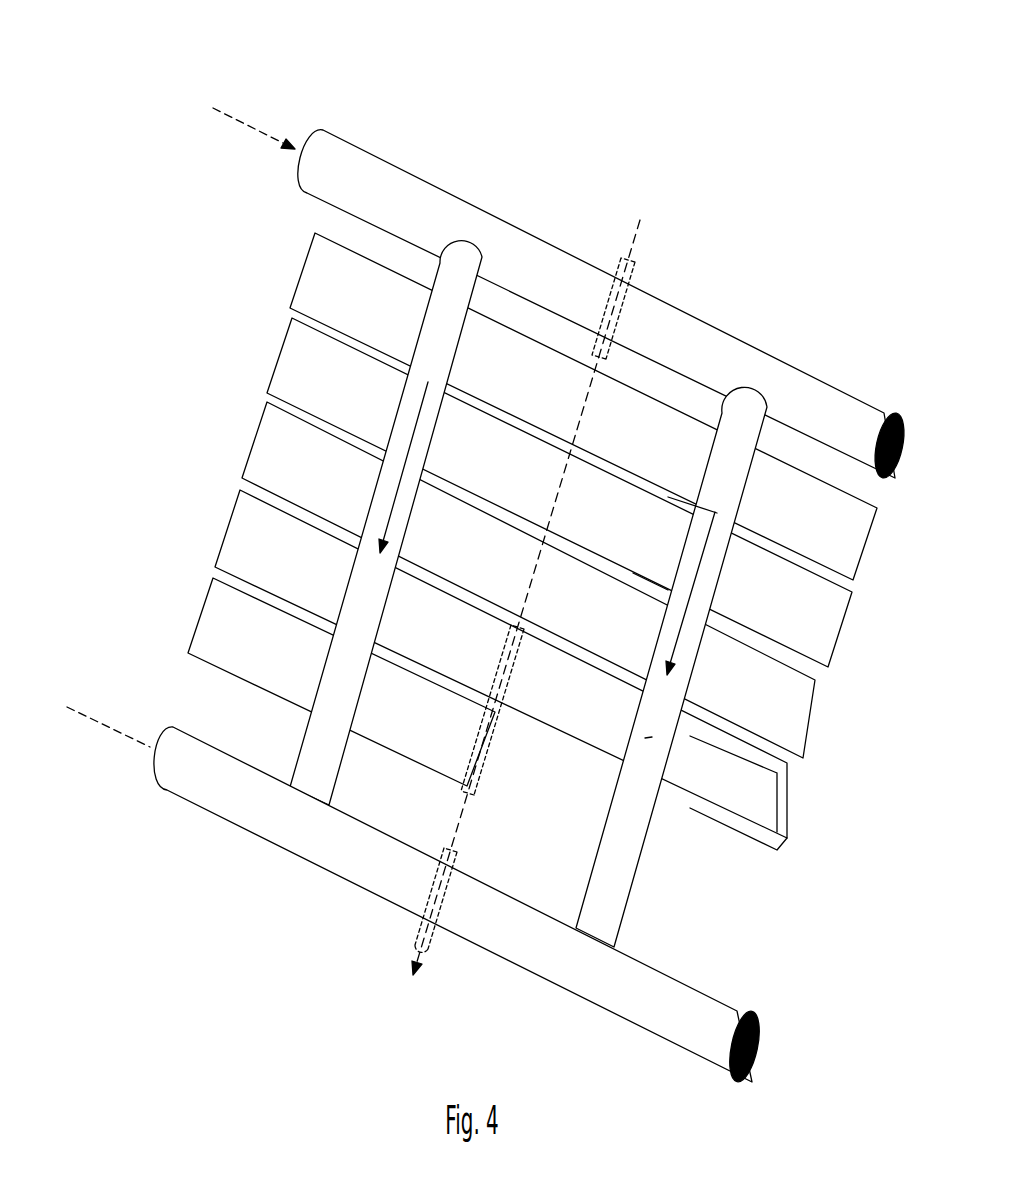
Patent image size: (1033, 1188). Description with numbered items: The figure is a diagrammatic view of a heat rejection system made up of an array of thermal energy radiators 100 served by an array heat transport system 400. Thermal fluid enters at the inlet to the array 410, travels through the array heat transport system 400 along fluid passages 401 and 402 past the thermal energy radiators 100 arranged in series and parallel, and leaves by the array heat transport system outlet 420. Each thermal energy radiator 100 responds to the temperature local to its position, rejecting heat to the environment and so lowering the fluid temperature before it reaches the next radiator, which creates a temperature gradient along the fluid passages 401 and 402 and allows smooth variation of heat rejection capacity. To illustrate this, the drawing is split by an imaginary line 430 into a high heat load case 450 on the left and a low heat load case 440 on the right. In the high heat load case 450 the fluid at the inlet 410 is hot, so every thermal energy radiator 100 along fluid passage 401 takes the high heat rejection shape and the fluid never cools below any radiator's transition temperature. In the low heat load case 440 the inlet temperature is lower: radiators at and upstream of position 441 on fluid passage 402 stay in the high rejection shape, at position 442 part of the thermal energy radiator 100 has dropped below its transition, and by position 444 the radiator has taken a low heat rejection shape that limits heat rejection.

The thermal energy radiator 100 is at (270, 265).
The array heat transport system 400 is at (426, 200).
The fluid passage 401 is at (462, 257).
The fluid passage 402 is at (751, 403).
The inlet to the array 410 is at (264, 113).
The array heat transport system outlet 420 is at (108, 740).
The imaginary line 430 is at (398, 1013).
The low heat load case 440 is at (538, 1038).
The position in fluid passage 402 441 is at (695, 540).
The position in fluid passage 402 442 is at (653, 645).
The position in fluid passage 402 444 is at (645, 738).
The high heat load case 450 is at (251, 931).